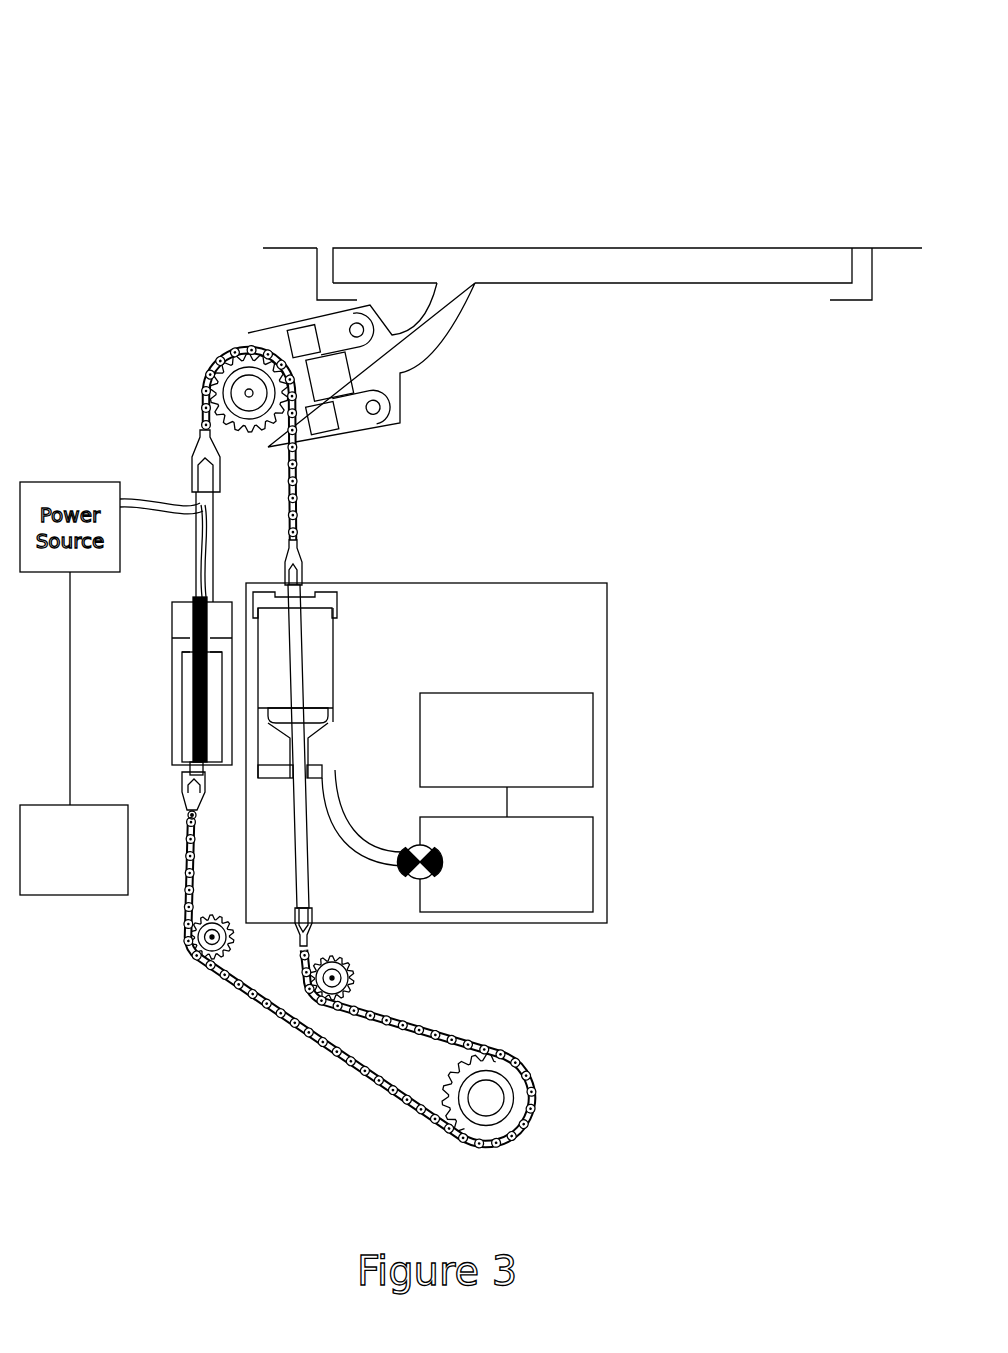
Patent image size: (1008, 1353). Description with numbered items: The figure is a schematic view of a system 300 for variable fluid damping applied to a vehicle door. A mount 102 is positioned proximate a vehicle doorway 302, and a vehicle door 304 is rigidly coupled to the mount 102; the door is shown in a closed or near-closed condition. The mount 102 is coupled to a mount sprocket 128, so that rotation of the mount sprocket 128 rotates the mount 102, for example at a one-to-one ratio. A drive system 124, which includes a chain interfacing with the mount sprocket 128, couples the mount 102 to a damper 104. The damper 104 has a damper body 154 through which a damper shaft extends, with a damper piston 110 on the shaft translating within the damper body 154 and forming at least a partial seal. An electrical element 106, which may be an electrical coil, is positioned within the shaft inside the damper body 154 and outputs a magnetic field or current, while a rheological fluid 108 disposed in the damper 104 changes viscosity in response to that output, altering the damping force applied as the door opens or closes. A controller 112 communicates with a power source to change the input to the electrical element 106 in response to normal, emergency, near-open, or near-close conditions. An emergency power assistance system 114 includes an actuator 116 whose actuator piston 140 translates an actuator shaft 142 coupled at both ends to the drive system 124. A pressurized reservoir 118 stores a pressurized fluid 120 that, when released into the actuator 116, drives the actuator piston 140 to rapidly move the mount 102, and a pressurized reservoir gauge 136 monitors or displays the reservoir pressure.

The system 300 is at (135, 62).
The vehicle doorway 302 is at (316, 262).
The vehicle door 304 is at (403, 247).
The mount 102 is at (352, 418).
The mount sprocket 128 is at (246, 393).
The drive system 124 is at (306, 490).
The damper 104 is at (161, 624).
The damper piston 110 is at (173, 645).
The electrical element 106 is at (193, 676).
The damper body 154 is at (173, 710).
The rheological fluid 108 is at (176, 745).
The controller 112 is at (22, 805).
The emergency power assistance system 114 is at (478, 743).
The actuator shaft 142 is at (292, 630).
The actuator 116 is at (340, 680).
The actuator piston 140 is at (330, 717).
The pressurized fluid 120 is at (330, 754).
The pressurized reservoir gauge 136 is at (595, 733).
The pressurized reservoir 118 is at (595, 871).